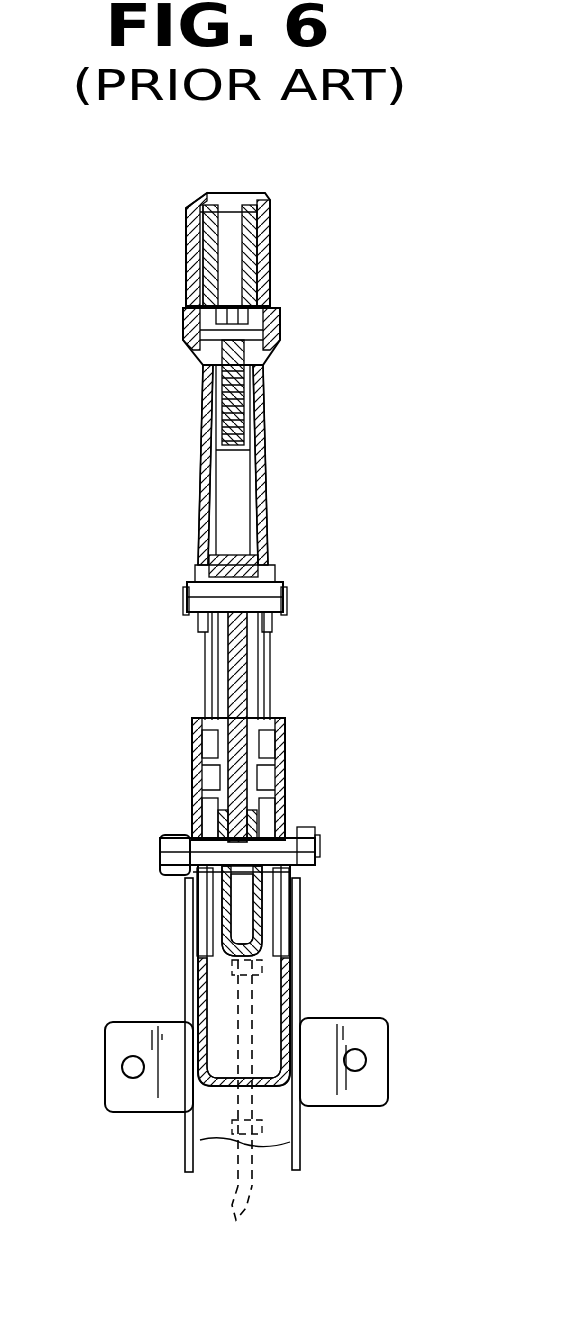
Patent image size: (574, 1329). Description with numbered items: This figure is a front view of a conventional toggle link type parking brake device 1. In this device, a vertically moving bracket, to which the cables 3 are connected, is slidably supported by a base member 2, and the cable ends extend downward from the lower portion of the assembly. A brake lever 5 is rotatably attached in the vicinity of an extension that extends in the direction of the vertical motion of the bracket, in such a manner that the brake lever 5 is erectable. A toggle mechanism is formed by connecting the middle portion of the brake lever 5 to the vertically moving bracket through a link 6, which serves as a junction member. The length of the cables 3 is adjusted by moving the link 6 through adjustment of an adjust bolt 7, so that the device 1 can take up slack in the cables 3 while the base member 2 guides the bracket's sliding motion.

The parking brake device 1 is at (128, 222).
The base member 2 is at (300, 935).
The cables 3 is at (256, 1196).
The brake lever 5 is at (268, 495).
The link 6 is at (250, 703).
The adjust bolt 7 is at (258, 372).